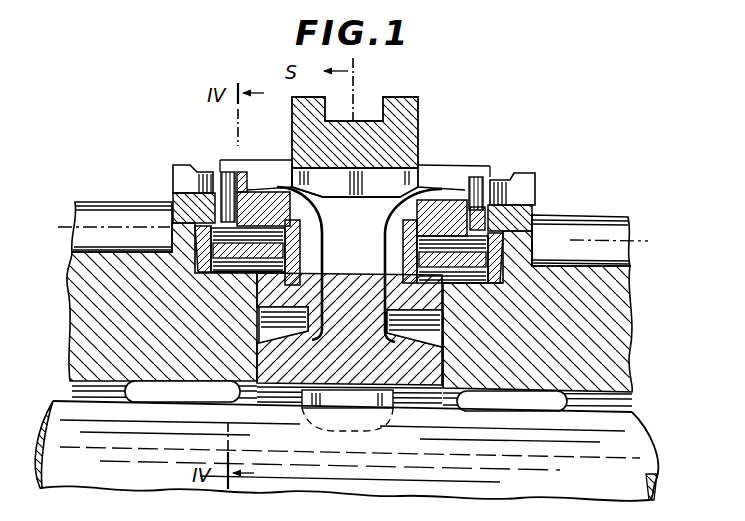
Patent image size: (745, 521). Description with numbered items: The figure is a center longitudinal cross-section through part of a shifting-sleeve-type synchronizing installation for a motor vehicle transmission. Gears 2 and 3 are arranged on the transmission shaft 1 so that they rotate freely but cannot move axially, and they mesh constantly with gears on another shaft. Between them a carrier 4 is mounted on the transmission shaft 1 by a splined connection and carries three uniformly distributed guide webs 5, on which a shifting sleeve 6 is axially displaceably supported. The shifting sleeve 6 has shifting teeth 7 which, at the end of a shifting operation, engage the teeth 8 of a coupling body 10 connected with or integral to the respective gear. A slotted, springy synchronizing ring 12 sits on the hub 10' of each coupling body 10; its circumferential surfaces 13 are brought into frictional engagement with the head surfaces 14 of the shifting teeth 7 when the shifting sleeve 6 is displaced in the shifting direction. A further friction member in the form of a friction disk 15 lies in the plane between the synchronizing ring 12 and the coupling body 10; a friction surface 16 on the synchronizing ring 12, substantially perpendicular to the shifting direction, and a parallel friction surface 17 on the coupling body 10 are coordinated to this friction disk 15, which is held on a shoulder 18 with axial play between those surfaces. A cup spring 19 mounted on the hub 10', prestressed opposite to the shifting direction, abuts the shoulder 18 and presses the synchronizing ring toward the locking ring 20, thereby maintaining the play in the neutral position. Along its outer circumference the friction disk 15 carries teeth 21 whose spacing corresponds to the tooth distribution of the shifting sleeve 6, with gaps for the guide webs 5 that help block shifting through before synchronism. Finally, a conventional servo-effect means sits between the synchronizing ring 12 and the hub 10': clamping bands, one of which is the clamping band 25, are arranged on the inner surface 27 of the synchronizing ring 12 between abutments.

The transmission shaft 1 is at (642, 457).
The gear 2 is at (78, 294).
The gear 3 is at (622, 304).
The carrier 4 is at (422, 373).
The guide web 5 is at (433, 173).
The shifting sleeve 6 is at (371, 127).
The shifting teeth 7 is at (348, 198).
The teeth of the coupling body 8 is at (180, 166).
The coupling body 10 is at (349, 202).
The hub of the coupling body 10' is at (465, 340).
The synchronizing ring 12 is at (245, 177).
The circumferential surfaces 13 is at (280, 182).
The head surfaces 14 is at (319, 186).
The friction disk 15 is at (222, 275).
The friction surface 16 is at (244, 210).
The friction surface 17 is at (176, 192).
The shoulder 18 is at (196, 240).
The cup spring 19 is at (203, 272).
The locking ring 20 is at (300, 255).
The teeth of the friction disk 21 is at (221, 172).
The clamping band 25 is at (480, 282).
The inner surface of the synchronizing ring 27 is at (254, 259).